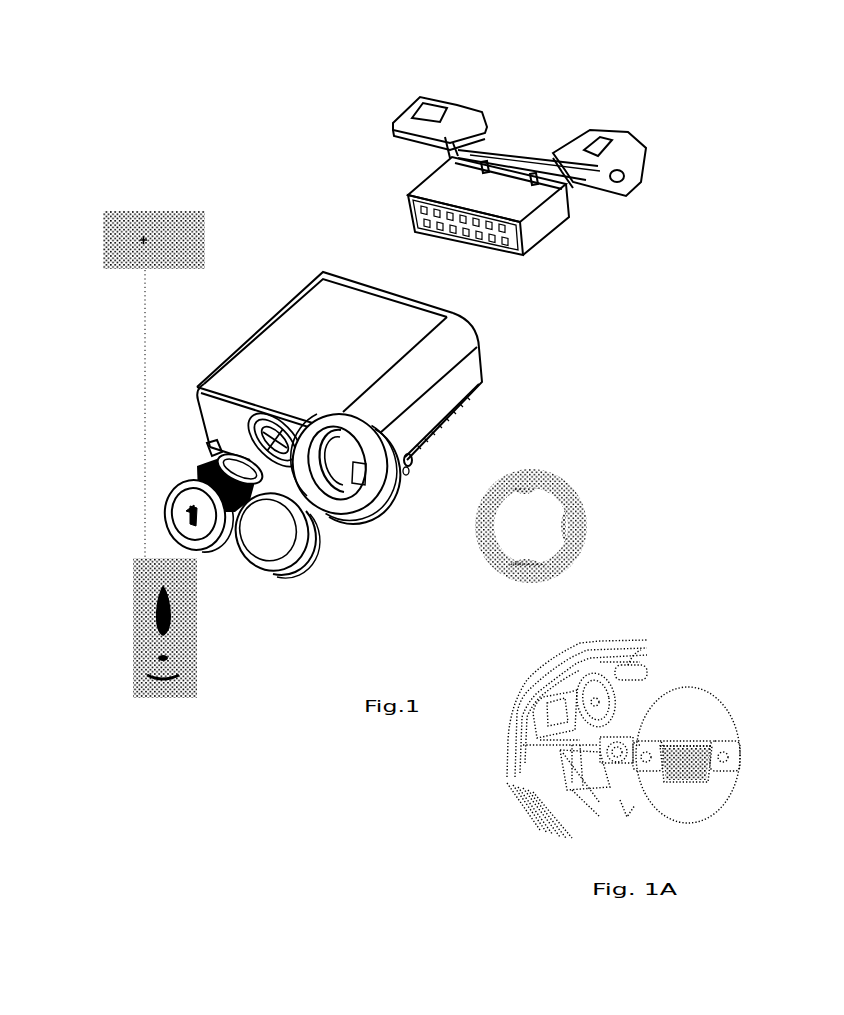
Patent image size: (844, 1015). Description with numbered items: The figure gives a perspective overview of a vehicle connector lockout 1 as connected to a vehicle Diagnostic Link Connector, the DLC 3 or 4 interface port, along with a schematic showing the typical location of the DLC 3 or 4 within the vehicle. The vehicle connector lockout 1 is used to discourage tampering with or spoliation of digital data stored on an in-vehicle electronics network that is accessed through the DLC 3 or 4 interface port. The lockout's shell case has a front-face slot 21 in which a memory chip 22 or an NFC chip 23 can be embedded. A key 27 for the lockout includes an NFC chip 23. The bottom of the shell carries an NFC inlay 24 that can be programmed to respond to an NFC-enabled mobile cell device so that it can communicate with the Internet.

In FIG. 1, the vehicle connector lockout 1 is at (217, 278).
In FIG. 1, the DLC interface port 3 is at (524, 192).
In FIG. 1A, the DLC interface port 3 is at (716, 755).
In FIG. 1, the DLC interface port 4 is at (553, 215).
In FIG. 1A, the DLC interface port 4 is at (738, 722).
In FIG. 1, the front-face slot 21 is at (340, 473).
In FIG. 1, the memory chip 22 is at (260, 543).
In FIG. 1, the NFC chip 23 is at (216, 137).
In FIG. 1, the NFC inlay 24 is at (475, 512).
In FIG. 1, the key 27 is at (148, 700).